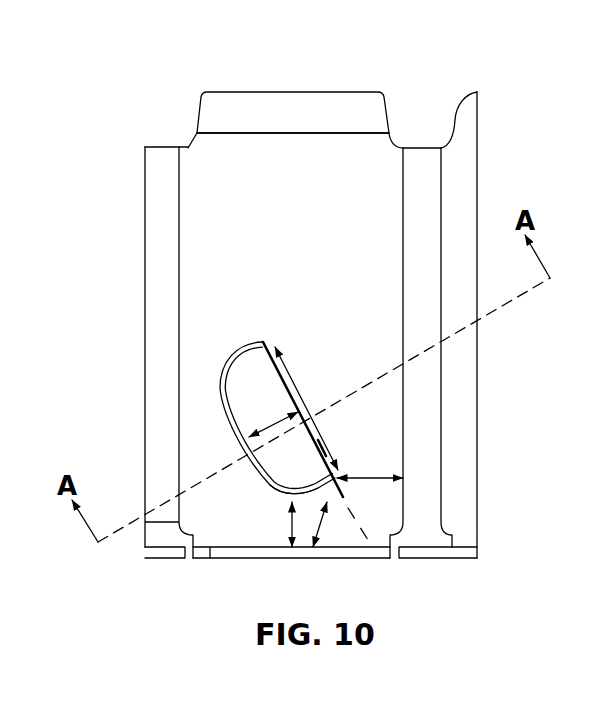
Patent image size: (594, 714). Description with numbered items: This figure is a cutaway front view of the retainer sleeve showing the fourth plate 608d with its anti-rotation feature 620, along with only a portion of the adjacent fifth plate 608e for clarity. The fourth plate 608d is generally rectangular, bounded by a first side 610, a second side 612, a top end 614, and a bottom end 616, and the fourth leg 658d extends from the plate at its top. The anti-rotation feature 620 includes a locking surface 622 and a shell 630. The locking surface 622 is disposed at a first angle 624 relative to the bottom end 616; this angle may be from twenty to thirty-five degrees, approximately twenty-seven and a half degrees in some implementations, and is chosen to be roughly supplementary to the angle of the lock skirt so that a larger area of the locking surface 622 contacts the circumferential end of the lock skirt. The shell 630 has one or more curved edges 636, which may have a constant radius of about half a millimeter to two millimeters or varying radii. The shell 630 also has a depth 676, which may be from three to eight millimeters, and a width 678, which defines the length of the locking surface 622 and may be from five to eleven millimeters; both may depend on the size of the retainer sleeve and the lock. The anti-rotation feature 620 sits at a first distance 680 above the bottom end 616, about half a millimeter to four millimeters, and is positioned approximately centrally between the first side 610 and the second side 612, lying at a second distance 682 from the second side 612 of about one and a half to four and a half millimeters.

The fourth leg 658d is at (277, 92).
The fourth plate 608d is at (198, 166).
The fifth plate 608e is at (468, 147).
The top end 614 is at (282, 133).
The first side 610 is at (179, 232).
The second side 612 is at (403, 229).
The bottom end 616 is at (248, 547).
The anti-rotation feature 620 is at (235, 384).
The shell 630 is at (253, 417).
The locking surface 622 is at (285, 383).
The first angle 624 is at (322, 513).
The depth 676 is at (280, 424).
The width 678 is at (322, 435).
The second distance 682 is at (372, 478).
The curved edges 636 is at (279, 494).
The first distance 680 is at (285, 528).